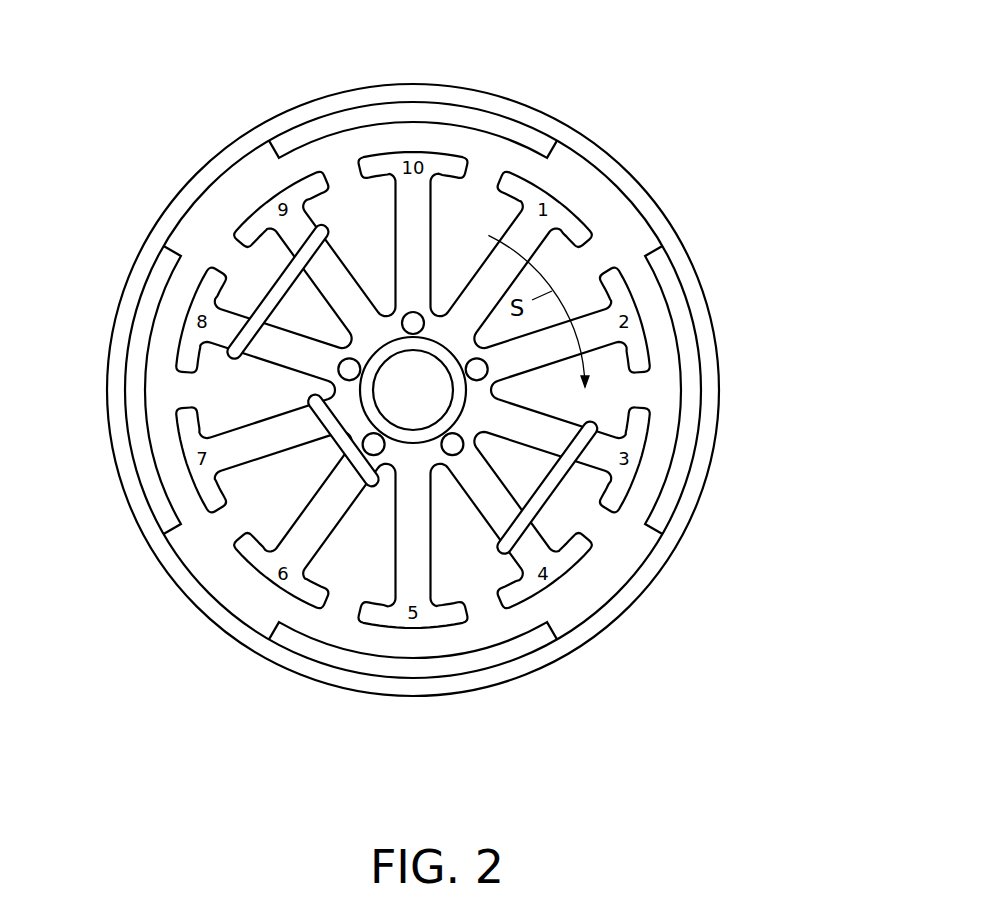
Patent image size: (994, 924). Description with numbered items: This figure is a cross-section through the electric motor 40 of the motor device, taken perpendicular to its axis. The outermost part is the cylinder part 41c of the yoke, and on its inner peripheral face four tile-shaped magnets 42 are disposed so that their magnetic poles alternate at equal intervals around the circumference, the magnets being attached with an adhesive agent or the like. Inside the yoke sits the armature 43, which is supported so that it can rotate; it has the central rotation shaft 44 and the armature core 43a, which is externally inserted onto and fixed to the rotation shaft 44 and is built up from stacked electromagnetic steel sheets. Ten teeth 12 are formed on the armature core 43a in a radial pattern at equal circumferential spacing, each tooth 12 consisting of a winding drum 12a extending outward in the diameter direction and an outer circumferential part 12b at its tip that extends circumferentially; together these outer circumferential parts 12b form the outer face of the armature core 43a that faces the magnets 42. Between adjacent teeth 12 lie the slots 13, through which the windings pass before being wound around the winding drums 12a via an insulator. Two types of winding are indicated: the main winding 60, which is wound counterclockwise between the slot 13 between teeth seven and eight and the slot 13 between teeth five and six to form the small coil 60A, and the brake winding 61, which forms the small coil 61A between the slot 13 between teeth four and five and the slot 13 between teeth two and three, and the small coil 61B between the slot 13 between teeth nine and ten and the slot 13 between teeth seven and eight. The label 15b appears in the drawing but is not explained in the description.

The electric motor 40 is at (660, 70).
The cylinder part 41c is at (695, 513).
The magnet 42 is at (412, 100).
The armature 43 is at (588, 203).
The armature core 43a is at (248, 208).
The tooth 12 is at (270, 190).
The winding drum 12a is at (295, 525).
The outer circumferential part 12b is at (277, 580).
The slot 13 is at (483, 170).
The slot 15b is at (218, 391).
The rotation shaft 44 is at (413, 427).
The main winding 60 is at (342, 440).
The small coil 60A is at (323, 422).
The brake winding 61 is at (537, 507).
The small coil 61A is at (550, 513).
The small coil 61B is at (278, 293).